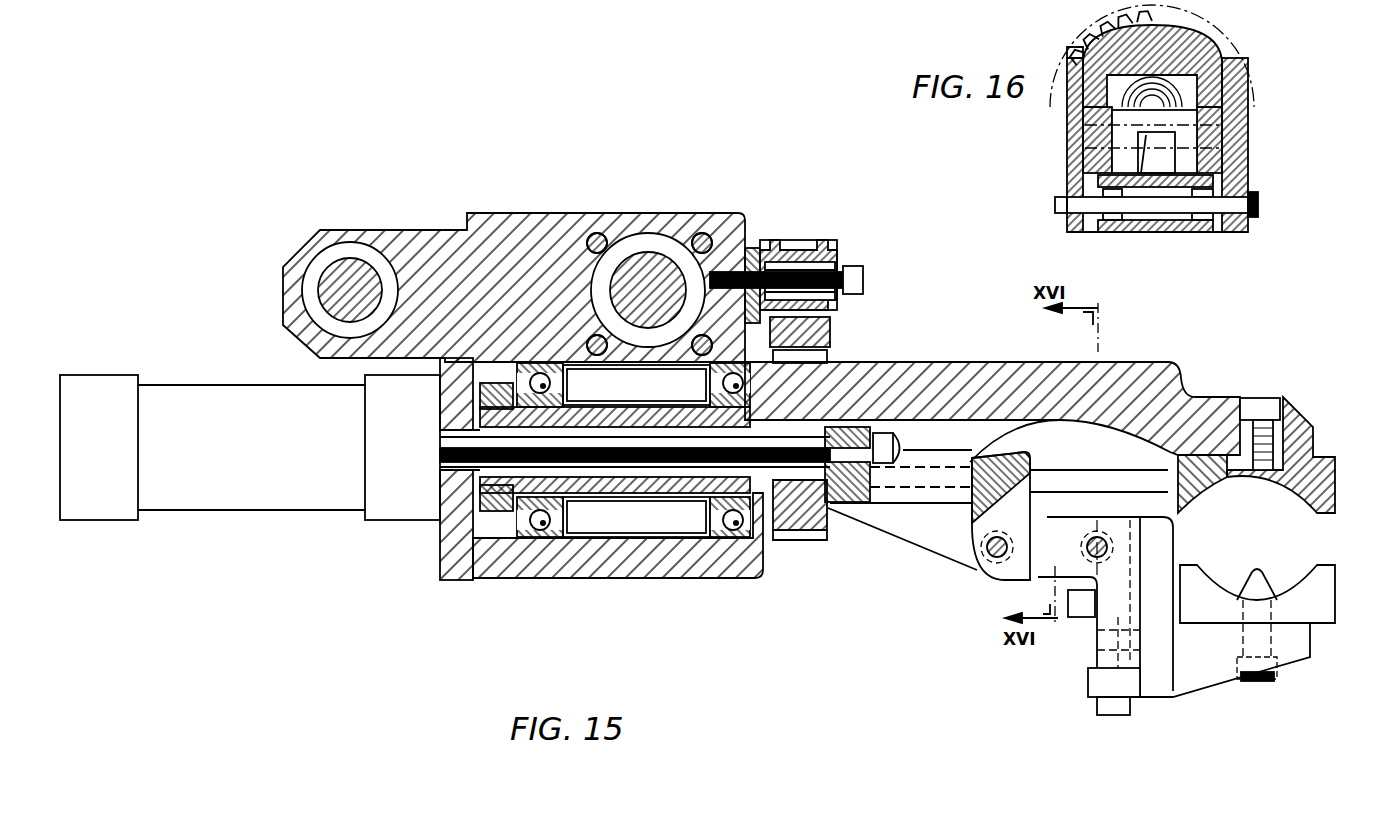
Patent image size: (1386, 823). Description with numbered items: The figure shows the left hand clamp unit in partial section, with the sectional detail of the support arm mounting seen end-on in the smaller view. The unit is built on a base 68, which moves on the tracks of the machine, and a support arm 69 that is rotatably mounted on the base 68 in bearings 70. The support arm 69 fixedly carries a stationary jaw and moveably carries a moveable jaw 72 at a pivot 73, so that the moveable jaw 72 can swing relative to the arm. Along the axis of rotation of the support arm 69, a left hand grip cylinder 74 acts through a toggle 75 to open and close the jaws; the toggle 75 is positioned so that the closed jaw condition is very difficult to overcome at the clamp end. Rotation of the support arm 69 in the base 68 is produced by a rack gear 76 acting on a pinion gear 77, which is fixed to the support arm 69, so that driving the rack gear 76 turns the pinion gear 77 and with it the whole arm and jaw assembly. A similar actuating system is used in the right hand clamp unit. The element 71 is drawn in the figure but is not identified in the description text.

The base 68 is at (552, 218).
The support arm 69 is at (935, 388).
The bearings 70 is at (703, 532).
The upper clamp block 71 is at (1317, 460).
The moveable jaw 72 is at (1308, 600).
The pivot 73 is at (1098, 542).
The left hand grip cylinder 74 is at (227, 493).
The toggle 75 is at (982, 548).
The rack gear 76 is at (828, 335).
The pinion gear 77 is at (826, 372).